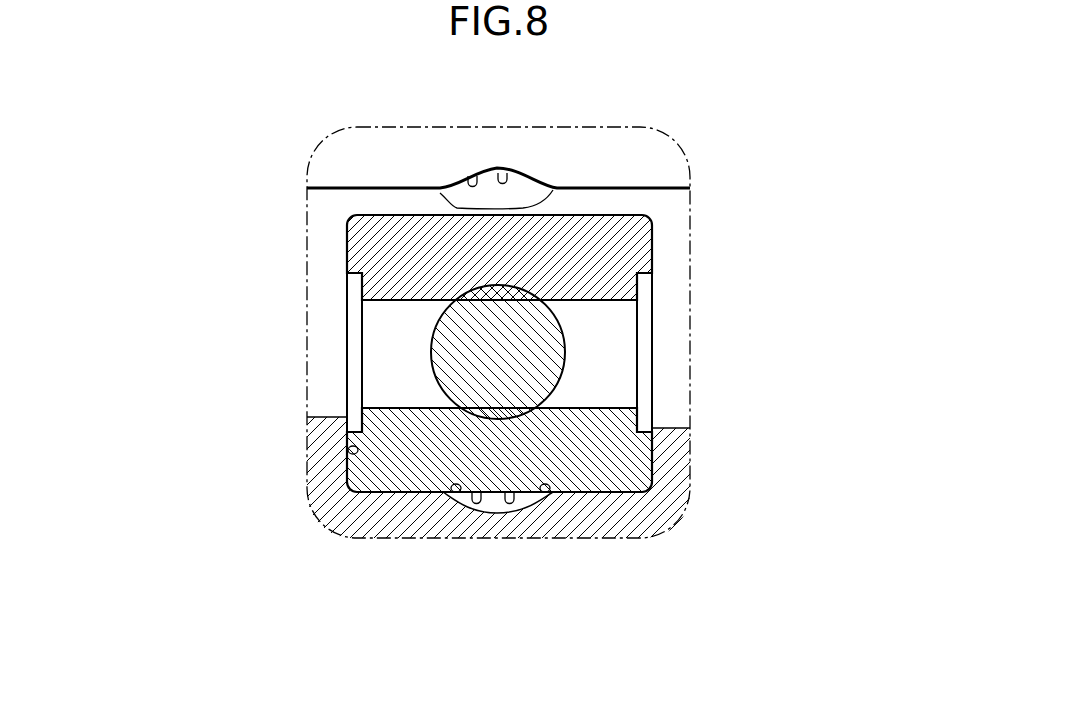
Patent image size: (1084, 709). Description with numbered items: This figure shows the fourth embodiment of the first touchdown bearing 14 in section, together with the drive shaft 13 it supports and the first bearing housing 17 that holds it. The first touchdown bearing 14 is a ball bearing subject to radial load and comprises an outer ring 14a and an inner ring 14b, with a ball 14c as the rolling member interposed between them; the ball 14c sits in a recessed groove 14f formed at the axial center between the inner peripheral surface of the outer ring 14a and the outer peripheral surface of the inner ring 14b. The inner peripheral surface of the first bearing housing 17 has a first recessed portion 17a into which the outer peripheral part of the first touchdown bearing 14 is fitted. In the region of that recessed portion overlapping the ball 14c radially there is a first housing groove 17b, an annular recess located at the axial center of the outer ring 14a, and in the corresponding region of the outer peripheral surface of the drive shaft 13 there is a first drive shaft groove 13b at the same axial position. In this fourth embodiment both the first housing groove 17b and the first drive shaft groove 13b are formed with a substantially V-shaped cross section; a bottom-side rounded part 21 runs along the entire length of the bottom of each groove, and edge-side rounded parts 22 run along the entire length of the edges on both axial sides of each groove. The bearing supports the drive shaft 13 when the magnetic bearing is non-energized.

The drive shaft 13 is at (660, 189).
The first drive shaft groove 13b is at (468, 177).
The first touchdown bearing 14 is at (497, 370).
The outer ring 14a is at (347, 484).
The inner ring 14b is at (652, 253).
The ball 14c is at (437, 334).
The recessed groove 14f is at (503, 290).
The first bearing housing 17 is at (652, 508).
The first recessed portion 17a is at (348, 450).
The first housing groove 17b is at (473, 495).
The bottom-side rounded part 21 is at (506, 172).
The edge-side rounded parts 22 is at (445, 191).